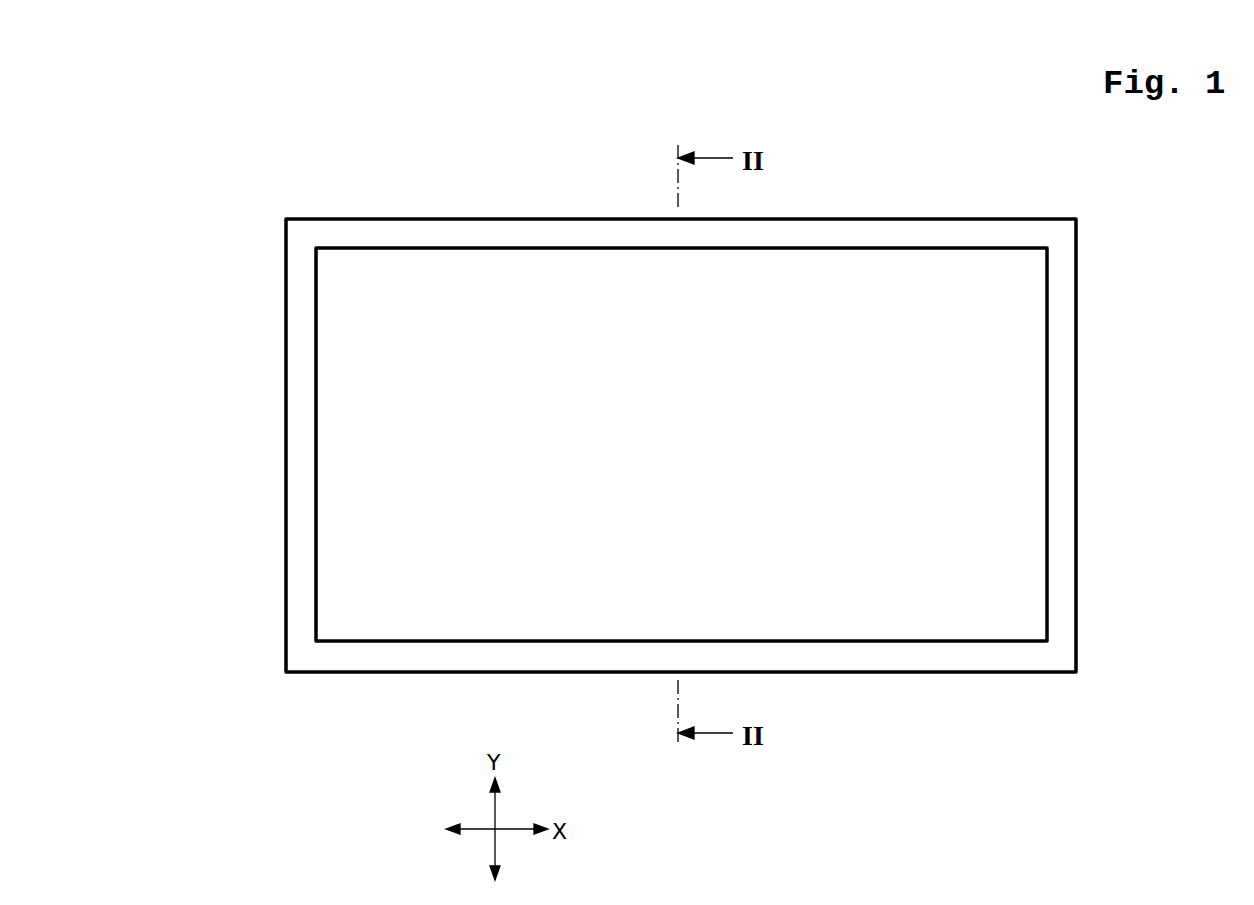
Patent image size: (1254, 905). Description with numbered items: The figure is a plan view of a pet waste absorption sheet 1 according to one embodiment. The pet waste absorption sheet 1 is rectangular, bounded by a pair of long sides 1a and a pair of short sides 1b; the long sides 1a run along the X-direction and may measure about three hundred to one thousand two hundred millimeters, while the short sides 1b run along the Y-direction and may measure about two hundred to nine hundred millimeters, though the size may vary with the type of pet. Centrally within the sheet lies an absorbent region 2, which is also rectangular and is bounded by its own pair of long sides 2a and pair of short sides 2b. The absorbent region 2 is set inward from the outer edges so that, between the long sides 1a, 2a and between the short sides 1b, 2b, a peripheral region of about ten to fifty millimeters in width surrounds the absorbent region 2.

The pet waste absorption sheet 1 is at (427, 157).
The long side 1a is at (551, 219).
The short side 1b is at (286, 507).
The absorbent region 2 is at (437, 598).
The long side 2a is at (884, 248).
The short side 2b is at (316, 412).